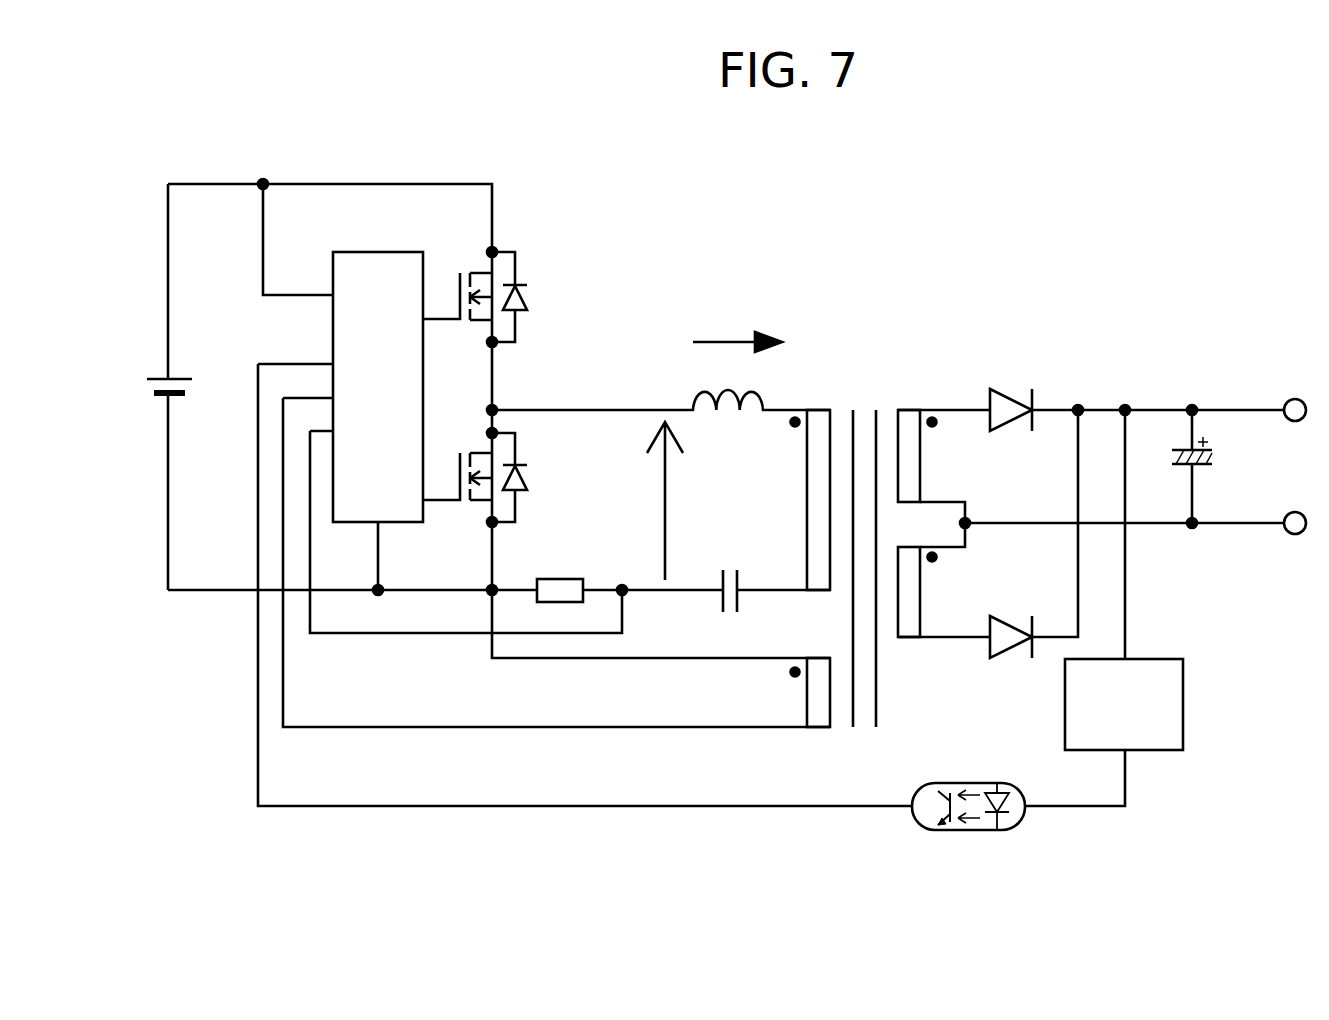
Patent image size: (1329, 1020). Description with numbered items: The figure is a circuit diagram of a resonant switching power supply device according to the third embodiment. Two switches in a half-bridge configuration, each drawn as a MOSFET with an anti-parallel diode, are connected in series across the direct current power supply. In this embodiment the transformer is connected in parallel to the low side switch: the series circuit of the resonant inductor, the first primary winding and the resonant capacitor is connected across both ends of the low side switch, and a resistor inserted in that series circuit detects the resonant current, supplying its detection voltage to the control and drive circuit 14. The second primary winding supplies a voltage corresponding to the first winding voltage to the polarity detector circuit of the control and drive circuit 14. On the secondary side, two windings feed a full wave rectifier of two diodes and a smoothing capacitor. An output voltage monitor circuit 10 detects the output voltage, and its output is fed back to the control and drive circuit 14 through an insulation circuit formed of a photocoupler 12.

The output voltage monitor circuit 10 is at (1150, 658).
The photocoupler 12 is at (975, 783).
The control and drive circuit 14 is at (385, 251).